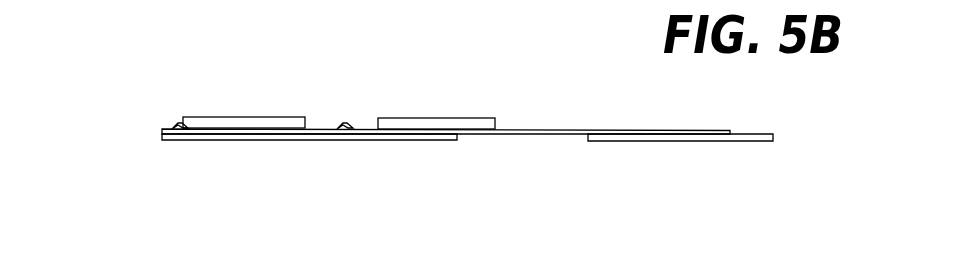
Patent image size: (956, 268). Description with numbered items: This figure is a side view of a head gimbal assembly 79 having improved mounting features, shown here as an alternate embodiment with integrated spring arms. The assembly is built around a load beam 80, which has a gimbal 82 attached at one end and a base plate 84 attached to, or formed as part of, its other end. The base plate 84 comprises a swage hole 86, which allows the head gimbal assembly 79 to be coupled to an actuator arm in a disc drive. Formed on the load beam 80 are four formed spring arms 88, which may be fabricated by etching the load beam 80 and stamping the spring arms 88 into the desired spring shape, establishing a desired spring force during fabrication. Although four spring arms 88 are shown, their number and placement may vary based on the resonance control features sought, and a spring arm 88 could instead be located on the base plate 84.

The head gimbal assembly 79 is at (420, 160).
The load beam 80 is at (618, 131).
The gimbal 82 is at (680, 138).
The base plate 84 is at (185, 141).
The swage hole 86 is at (250, 119).
The spring arms 88 is at (177, 125).